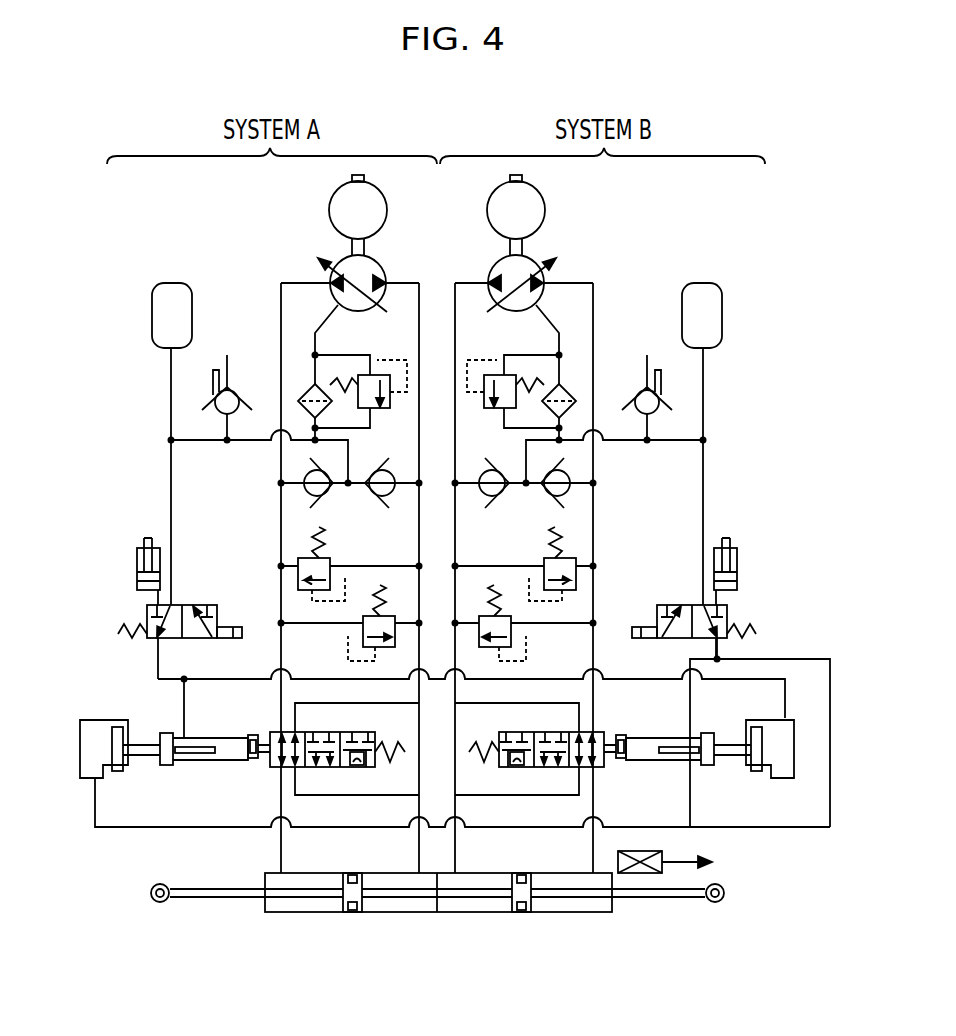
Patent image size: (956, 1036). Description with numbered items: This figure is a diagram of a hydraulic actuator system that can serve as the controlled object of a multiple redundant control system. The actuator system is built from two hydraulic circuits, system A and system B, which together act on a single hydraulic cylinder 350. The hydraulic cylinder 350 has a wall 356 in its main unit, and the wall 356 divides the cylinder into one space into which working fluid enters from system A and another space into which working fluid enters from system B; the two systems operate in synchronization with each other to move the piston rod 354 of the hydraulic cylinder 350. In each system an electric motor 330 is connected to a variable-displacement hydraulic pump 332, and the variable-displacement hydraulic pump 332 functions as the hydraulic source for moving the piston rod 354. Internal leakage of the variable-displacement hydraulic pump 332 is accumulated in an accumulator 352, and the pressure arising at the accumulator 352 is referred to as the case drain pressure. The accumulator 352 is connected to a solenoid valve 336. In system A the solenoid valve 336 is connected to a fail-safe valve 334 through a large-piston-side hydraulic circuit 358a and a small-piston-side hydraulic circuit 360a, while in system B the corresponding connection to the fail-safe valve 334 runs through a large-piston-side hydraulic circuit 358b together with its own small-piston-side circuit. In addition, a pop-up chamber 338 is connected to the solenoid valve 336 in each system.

The electric motor 330 is at (329, 207).
The variable-displacement hydraulic pump 332 is at (331, 273).
The fail-safe valve 334 is at (222, 765).
The solenoid valve 336 is at (207, 593).
The pop-up chamber 338 is at (137, 556).
The hydraulic cylinder 350 is at (355, 925).
The accumulator 352 is at (170, 282).
The piston rod 354 is at (201, 899).
The wall 356 is at (440, 898).
The large-piston-side hydraulic circuit 358a is at (223, 681).
The large-piston-side hydraulic circuit 358b is at (804, 657).
The small-piston-side hydraulic circuit 360a is at (183, 703).